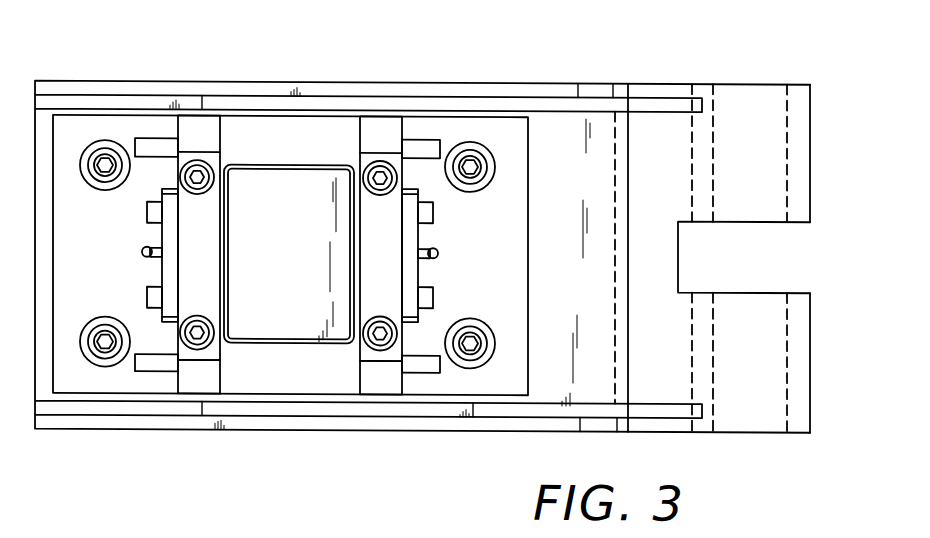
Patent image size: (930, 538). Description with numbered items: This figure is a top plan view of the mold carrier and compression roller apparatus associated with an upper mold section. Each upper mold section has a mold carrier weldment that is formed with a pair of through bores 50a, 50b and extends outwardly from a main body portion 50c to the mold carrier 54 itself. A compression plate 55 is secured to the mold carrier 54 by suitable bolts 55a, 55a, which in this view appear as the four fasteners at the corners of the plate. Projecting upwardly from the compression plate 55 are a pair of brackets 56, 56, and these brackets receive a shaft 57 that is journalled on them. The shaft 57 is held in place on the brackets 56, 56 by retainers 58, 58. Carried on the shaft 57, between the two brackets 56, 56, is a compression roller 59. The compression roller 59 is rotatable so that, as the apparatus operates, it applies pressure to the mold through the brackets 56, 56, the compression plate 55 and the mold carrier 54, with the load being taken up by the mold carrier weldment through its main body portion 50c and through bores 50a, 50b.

The through bore 50a is at (788, 379).
The through bore 50b is at (693, 382).
The main body portion 50c is at (803, 411).
The mold carrier 54 is at (411, 423).
The compression plate 55 is at (508, 381).
The bolt 55a is at (106, 149).
The bracket 56 is at (200, 379).
The shaft 57 is at (355, 253).
The retainer 58 is at (212, 161).
The compression roller 59 is at (311, 342).